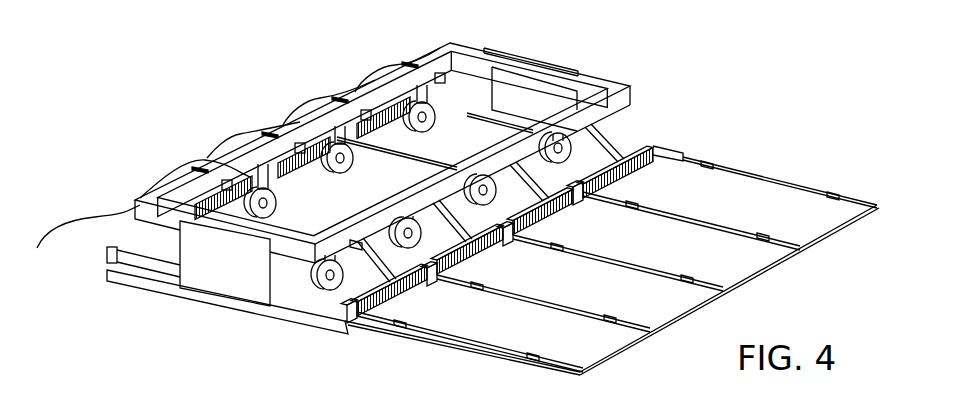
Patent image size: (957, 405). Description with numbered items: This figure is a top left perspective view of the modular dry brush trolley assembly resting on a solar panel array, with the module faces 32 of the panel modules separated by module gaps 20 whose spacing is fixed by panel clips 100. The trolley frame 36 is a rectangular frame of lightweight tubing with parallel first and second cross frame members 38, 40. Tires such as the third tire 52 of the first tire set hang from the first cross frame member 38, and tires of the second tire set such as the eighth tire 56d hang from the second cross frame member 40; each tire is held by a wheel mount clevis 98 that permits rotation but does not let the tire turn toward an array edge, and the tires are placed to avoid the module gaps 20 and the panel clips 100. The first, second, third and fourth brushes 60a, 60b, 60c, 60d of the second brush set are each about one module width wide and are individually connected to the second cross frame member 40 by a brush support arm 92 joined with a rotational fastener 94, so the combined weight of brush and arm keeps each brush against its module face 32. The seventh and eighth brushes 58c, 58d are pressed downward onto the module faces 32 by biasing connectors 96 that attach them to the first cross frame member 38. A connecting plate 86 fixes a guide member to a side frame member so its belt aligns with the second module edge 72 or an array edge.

The module gap 20 is at (700, 222).
The module face 32 is at (703, 291).
The trolley frame 36 is at (382, 134).
The first cross frame member 38 is at (302, 123).
The second cross frame member 40 is at (357, 225).
The third tire 52 is at (353, 167).
The eighth tire 56d is at (645, 146).
The seventh brush 58c is at (270, 190).
The eighth brush 58d is at (412, 128).
The first brush 60a is at (360, 311).
The second brush 60b is at (437, 274).
The third brush 60c is at (514, 233).
The fourth brush 60d is at (586, 193).
The second module edge 72 is at (751, 171).
The connecting plate 86 is at (600, 78).
The brush support arm 92 is at (358, 252).
The rotational fastener 94 is at (500, 163).
The biasing connector 96 is at (177, 200).
The wheel mount clevis 98 is at (583, 128).
The panel clip 100 is at (766, 235).